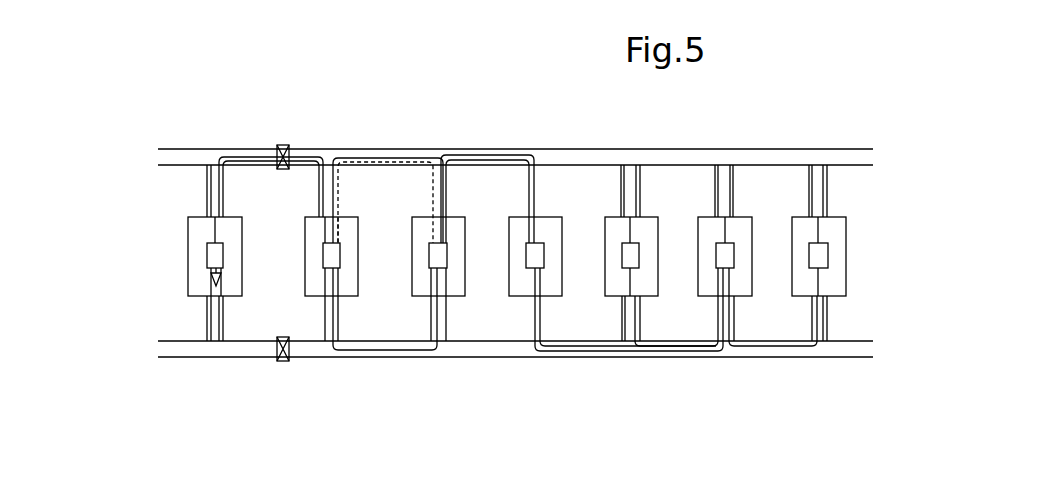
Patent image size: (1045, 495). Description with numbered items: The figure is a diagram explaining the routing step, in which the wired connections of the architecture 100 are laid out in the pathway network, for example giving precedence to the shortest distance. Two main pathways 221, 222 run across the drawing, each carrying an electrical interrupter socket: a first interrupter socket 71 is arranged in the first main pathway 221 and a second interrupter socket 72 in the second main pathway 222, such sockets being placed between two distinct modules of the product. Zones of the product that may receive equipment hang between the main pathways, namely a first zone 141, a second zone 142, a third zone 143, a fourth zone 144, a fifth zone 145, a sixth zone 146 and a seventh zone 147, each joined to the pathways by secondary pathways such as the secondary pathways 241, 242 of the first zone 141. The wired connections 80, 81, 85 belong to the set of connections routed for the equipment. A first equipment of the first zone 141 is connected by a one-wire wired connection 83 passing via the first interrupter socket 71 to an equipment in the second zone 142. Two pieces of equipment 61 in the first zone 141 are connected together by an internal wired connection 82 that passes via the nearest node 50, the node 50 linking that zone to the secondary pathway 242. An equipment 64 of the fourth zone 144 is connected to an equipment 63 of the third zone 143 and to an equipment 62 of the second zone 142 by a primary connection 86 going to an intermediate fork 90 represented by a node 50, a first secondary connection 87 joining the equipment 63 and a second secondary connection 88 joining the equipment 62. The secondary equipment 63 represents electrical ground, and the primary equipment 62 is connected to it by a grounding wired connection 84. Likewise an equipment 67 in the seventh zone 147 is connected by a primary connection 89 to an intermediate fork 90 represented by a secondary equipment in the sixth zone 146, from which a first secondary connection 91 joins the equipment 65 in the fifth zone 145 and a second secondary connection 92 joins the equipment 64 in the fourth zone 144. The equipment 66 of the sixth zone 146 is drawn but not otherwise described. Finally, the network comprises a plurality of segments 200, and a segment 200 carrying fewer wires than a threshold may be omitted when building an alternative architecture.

The architecture 100 is at (150, 136).
The segment 200 is at (502, 382).
The node 50 is at (215, 146).
The wired connection 80 is at (190, 176).
The one-wire wired connection 83 is at (262, 157).
The first interrupter socket 71 is at (283, 145).
The second interrupter socket 72 is at (282, 361).
The wired connection 85 is at (345, 156).
The second secondary connection 88 is at (437, 158).
The first secondary connection 87 is at (490, 155).
The intermediate fork 90 is at (533, 148).
The fifth zone 145 is at (588, 165).
The sixth zone 146 is at (687, 167).
The seventh zone 147 is at (783, 167).
The first main pathway 221 is at (850, 157).
The second main pathway 222 is at (838, 350).
The first zone 141 is at (188, 250).
The second zone 142 is at (358, 232).
The third zone 143 is at (466, 280).
The fourth zone 144 is at (563, 258).
The equipment 61 is at (223, 255).
The primary equipment 62 is at (341, 258).
The secondary equipment 63 is at (448, 255).
The equipment 64 is at (545, 260).
The equipment 65 is at (640, 253).
The sixth heat exchanger 66 is at (735, 253).
The equipment 67 is at (829, 255).
The secondary pathway 241 is at (224, 180).
The secondary pathway 242 is at (224, 313).
The wired connection 81 is at (207, 283).
The internal wired connection 82 is at (228, 273).
The grounding wired connection 84 is at (378, 354).
The primary connection 86 is at (536, 225).
The primary connection 89 is at (760, 348).
The first secondary connection 91 is at (690, 347).
The second secondary connection 92 is at (642, 353).